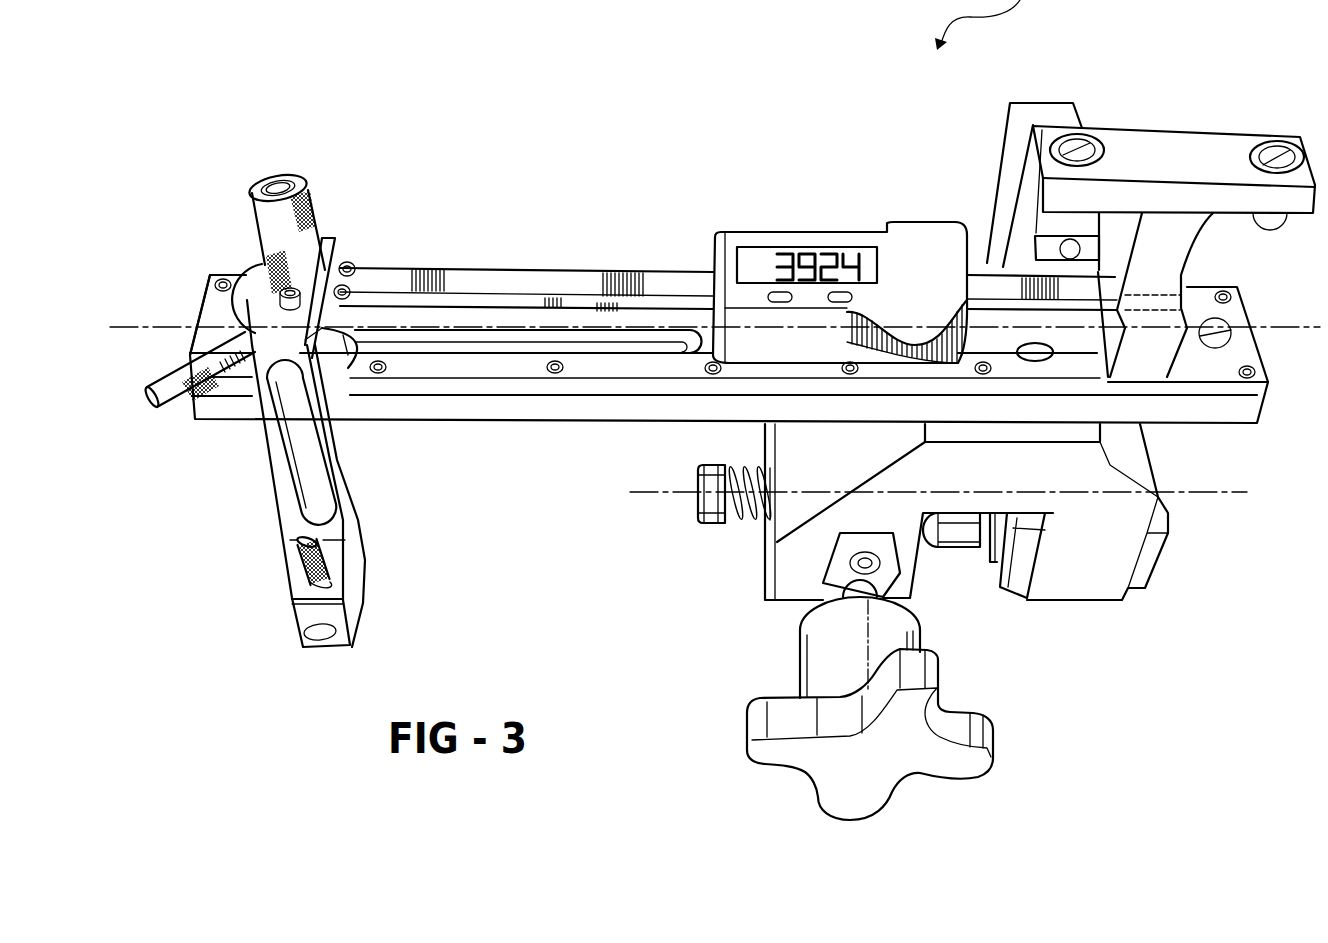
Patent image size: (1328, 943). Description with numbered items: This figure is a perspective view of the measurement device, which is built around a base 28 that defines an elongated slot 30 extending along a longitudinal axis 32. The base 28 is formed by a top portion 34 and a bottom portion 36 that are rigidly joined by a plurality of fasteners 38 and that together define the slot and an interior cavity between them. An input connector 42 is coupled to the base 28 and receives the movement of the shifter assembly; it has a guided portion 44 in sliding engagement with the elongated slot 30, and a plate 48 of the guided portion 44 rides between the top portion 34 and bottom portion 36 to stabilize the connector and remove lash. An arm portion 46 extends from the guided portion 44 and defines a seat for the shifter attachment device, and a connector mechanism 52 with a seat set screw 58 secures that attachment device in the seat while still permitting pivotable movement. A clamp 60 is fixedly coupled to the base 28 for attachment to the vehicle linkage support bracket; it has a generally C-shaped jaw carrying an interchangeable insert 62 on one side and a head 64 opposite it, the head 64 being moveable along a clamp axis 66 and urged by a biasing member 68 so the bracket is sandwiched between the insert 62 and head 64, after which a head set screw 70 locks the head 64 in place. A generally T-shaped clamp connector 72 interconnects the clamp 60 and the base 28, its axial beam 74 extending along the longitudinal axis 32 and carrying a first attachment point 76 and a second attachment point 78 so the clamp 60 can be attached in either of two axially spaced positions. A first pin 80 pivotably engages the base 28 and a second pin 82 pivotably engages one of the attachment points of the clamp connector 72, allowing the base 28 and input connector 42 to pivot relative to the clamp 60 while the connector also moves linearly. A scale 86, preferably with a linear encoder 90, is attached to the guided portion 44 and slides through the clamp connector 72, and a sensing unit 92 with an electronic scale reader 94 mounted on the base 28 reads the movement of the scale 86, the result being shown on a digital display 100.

The base 28 is at (467, 408).
The elongated slot 30 is at (687, 347).
The longitudinal axis 32 is at (150, 320).
The top portion 34 is at (225, 385).
The bottom portion 36 is at (237, 410).
The fasteners 38 is at (390, 368).
The input connector 42 is at (344, 230).
The guided portion 44 is at (252, 290).
The arm portion 46 is at (278, 476).
The plate 48 is at (537, 345).
The connector mechanism 52 is at (347, 438).
The seat set screw 58 is at (165, 390).
The clamp 60 is at (1077, 570).
The insert 62 is at (1015, 577).
The head 64 is at (953, 543).
The clamp axis 66 is at (1208, 492).
The biasing member 68 is at (742, 520).
The head set screw 70 is at (762, 753).
The clamp connector 72 is at (1028, 110).
The axial beam 74 is at (1167, 145).
The first attachment point 76 is at (1078, 148).
The second attachment point 78 is at (1273, 152).
The first pin 80 is at (1088, 148).
The second pin 82 is at (1030, 360).
The scale 86 is at (497, 283).
The linear encoder 90 is at (583, 297).
The sensing unit 92 is at (845, 228).
The electronic scale reader 94 is at (918, 273).
The display 100 is at (763, 262).